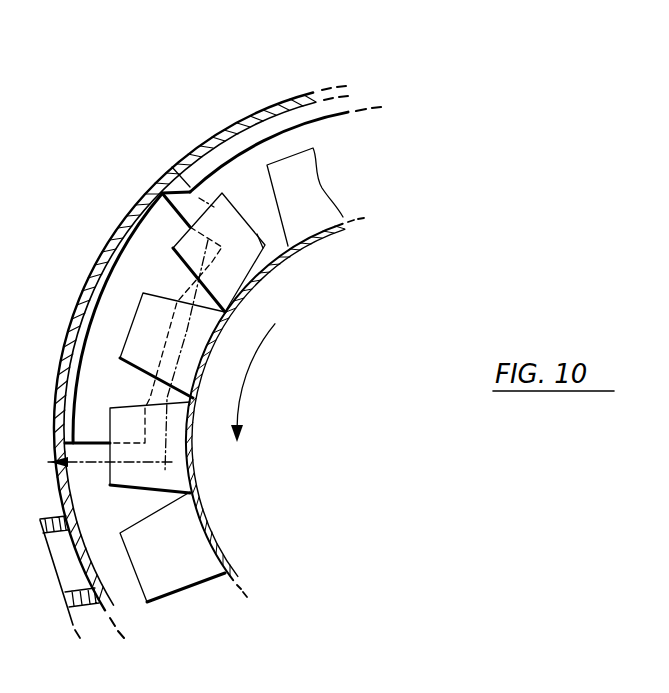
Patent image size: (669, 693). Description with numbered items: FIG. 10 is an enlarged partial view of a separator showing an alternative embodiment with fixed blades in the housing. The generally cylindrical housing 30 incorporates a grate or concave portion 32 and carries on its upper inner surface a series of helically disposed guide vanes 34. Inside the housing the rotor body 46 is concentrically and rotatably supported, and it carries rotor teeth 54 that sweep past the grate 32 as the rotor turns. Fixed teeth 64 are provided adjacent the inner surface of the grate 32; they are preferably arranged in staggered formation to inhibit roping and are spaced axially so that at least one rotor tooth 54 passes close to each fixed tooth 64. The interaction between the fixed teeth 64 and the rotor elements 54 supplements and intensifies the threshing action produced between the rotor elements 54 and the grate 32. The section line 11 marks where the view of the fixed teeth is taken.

The housing 30 is at (291, 74).
The guide vanes 34 is at (241, 152).
The rotor body 46 is at (207, 505).
The fixed teeth 64 is at (153, 267).
The section line 11- 11 is at (172, 167).
The rotor tooth 54 is at (190, 594).
The grate 32 is at (62, 597).